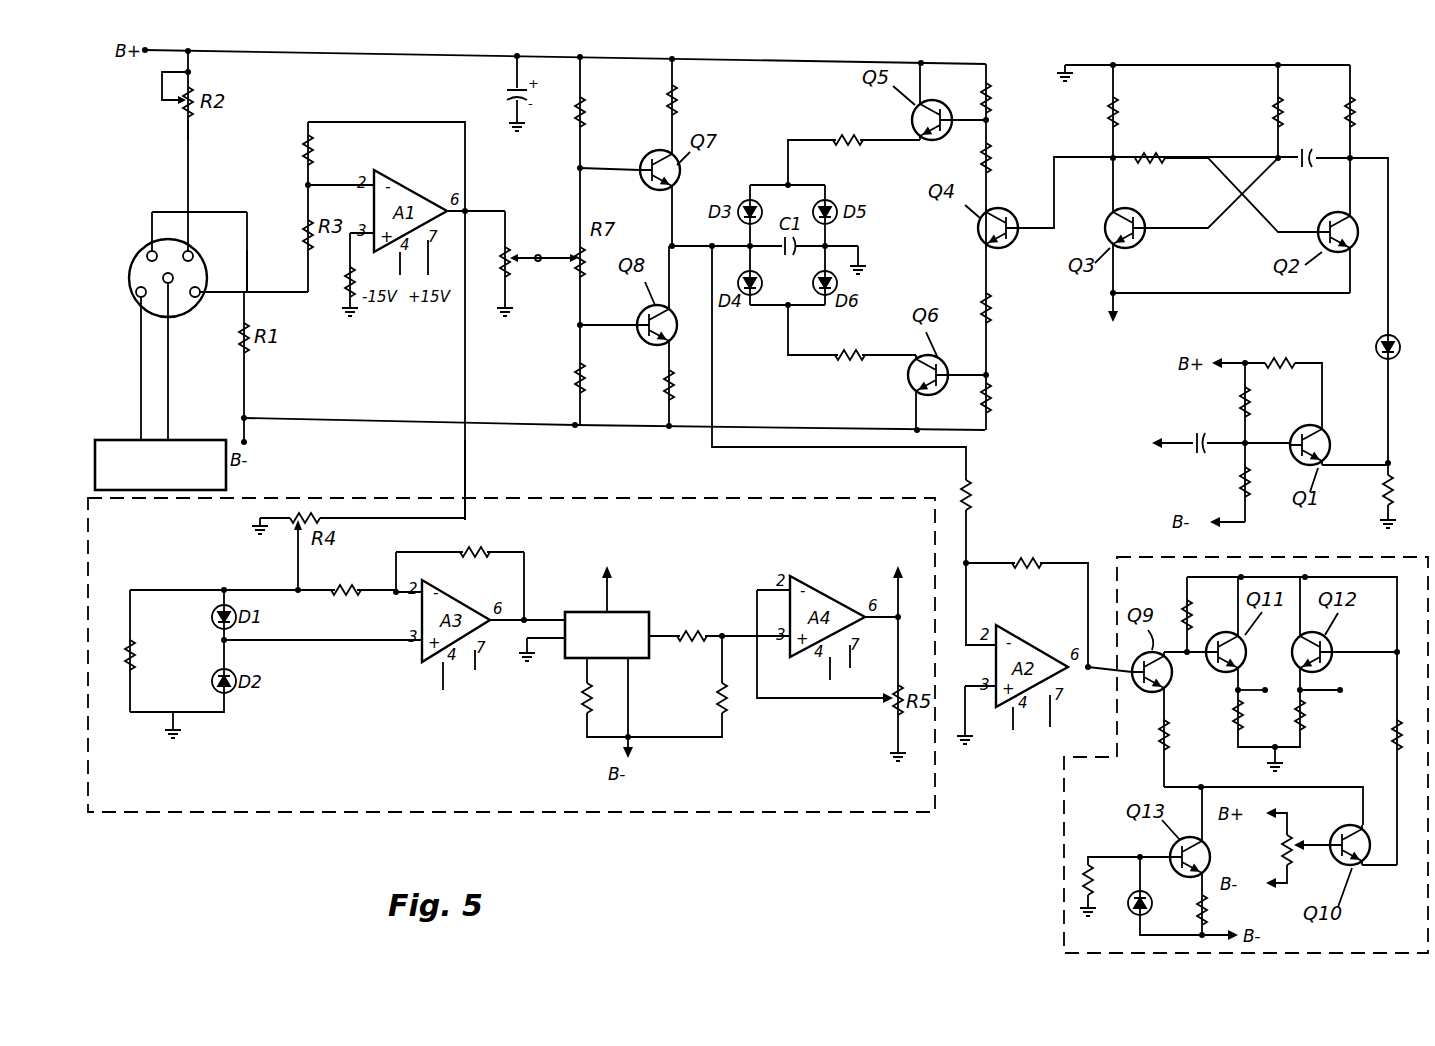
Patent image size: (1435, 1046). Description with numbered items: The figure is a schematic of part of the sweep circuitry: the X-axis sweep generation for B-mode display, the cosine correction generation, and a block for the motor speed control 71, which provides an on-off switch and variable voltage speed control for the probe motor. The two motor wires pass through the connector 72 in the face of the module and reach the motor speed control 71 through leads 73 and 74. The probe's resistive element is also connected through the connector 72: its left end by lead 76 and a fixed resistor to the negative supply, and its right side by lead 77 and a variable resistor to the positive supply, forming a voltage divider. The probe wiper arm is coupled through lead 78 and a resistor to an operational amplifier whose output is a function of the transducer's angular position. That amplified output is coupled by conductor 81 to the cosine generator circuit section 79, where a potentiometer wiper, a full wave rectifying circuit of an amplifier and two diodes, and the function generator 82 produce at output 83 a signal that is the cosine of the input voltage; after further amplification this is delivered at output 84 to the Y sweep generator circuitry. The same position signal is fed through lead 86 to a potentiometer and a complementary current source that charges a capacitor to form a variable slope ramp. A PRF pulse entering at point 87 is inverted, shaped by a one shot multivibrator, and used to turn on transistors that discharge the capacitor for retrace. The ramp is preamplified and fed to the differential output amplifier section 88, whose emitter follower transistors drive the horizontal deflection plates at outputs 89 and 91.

The motor speed control 71 is at (121, 436).
The connector 72 is at (137, 250).
The lead 73 is at (134, 358).
The lead 74 is at (174, 393).
The lead 76 is at (160, 208).
The lead 77 is at (180, 130).
The lead 78 is at (268, 284).
The cosine generator circuit section 79 is at (338, 498).
The conductor 81 is at (472, 494).
The function generator 82 is at (648, 610).
The output 83 is at (676, 634).
The output 84 is at (892, 590).
The lead 86 is at (509, 205).
The pulse input point 87 is at (1166, 438).
The differential output amplifier section 88 is at (1062, 856).
The output to horizontal deflection plates 89 is at (1265, 686).
The output to horizontal deflection plates 91 is at (1322, 692).